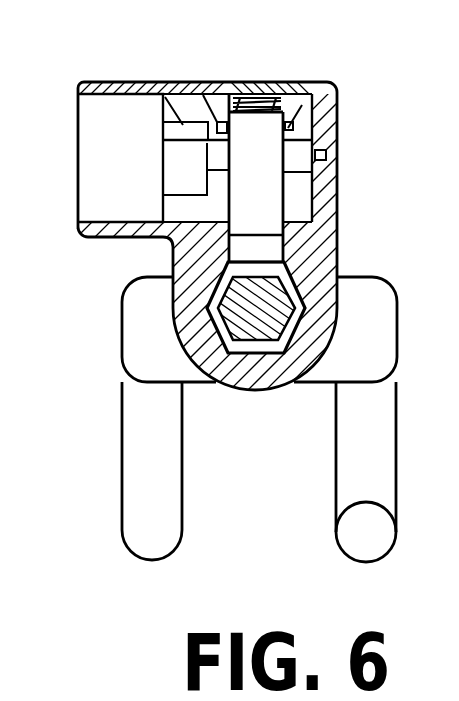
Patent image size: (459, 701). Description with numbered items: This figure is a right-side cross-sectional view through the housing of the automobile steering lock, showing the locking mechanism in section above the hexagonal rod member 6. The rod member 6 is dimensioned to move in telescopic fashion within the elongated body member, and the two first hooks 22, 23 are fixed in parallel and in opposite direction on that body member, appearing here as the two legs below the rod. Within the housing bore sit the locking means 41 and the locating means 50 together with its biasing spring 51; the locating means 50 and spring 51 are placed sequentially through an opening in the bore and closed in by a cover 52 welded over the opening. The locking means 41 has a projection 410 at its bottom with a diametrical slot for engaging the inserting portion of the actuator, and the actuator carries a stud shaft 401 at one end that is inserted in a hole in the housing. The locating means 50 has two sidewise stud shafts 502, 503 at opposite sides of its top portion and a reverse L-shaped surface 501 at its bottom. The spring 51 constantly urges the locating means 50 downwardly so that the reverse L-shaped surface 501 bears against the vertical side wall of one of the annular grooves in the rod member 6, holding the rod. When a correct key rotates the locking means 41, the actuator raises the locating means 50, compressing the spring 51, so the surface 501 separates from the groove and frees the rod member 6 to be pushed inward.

The locking means 41 is at (93, 153).
The projection 410 is at (150, 85).
The sidewise stud shaft 503 is at (333, 93).
The sidewise stud shaft 502 is at (203, 95).
The biasing spring 51 is at (243, 83).
The cover 52 is at (275, 83).
The stud shaft 401 is at (330, 157).
The locating means 50 is at (263, 197).
The reverse L-shaped surface 501 is at (268, 245).
The hexagonal rod member 6 is at (278, 310).
The first hook 22 is at (176, 474).
The first hook 23 is at (345, 438).